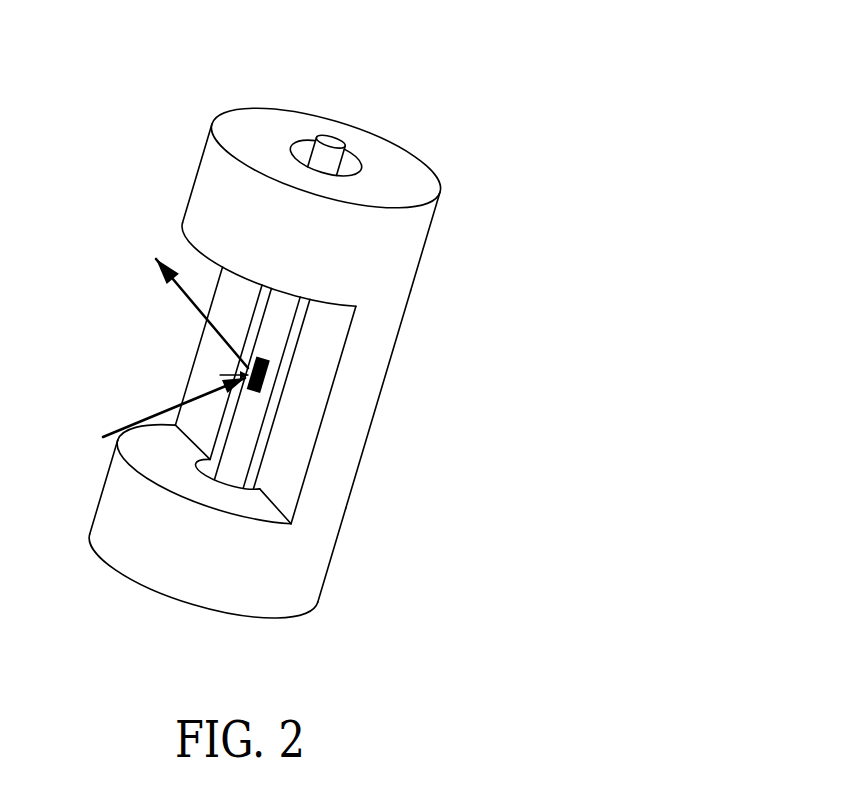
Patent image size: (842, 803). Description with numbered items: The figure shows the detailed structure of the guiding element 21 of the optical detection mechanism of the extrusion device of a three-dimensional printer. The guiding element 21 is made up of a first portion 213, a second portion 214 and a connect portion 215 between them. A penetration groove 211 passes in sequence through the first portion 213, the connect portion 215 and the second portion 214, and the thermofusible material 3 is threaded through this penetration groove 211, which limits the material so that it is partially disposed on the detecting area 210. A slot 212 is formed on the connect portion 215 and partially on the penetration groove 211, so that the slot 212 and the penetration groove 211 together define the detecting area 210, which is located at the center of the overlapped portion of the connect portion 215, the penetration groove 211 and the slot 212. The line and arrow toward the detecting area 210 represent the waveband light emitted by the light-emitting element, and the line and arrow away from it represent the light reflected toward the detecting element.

The guiding element 21 is at (430, 398).
The thermofusible material 3 is at (330, 142).
The detecting area 210 is at (266, 370).
The penetration groove 211 is at (303, 152).
The slot 212 is at (180, 255).
The first portion 213 is at (363, 238).
The second portion 214 is at (218, 573).
The connect portion 215 is at (357, 412).